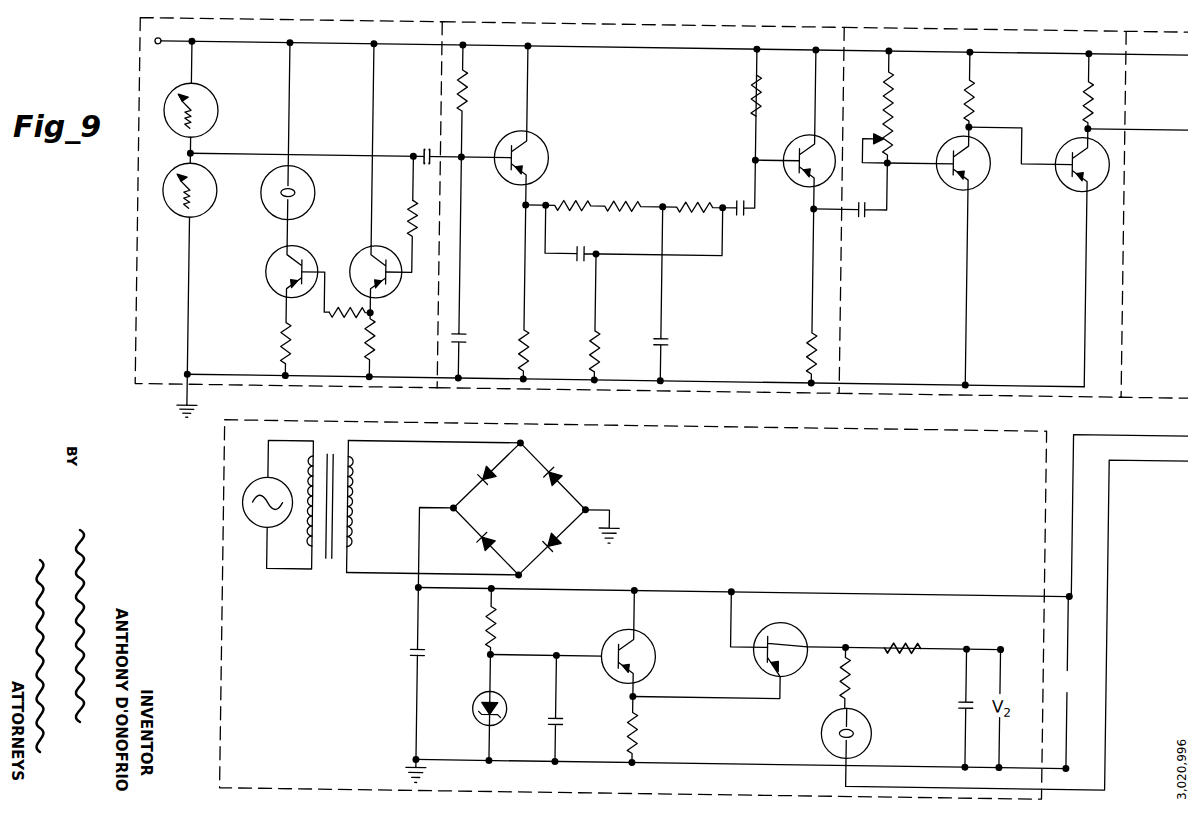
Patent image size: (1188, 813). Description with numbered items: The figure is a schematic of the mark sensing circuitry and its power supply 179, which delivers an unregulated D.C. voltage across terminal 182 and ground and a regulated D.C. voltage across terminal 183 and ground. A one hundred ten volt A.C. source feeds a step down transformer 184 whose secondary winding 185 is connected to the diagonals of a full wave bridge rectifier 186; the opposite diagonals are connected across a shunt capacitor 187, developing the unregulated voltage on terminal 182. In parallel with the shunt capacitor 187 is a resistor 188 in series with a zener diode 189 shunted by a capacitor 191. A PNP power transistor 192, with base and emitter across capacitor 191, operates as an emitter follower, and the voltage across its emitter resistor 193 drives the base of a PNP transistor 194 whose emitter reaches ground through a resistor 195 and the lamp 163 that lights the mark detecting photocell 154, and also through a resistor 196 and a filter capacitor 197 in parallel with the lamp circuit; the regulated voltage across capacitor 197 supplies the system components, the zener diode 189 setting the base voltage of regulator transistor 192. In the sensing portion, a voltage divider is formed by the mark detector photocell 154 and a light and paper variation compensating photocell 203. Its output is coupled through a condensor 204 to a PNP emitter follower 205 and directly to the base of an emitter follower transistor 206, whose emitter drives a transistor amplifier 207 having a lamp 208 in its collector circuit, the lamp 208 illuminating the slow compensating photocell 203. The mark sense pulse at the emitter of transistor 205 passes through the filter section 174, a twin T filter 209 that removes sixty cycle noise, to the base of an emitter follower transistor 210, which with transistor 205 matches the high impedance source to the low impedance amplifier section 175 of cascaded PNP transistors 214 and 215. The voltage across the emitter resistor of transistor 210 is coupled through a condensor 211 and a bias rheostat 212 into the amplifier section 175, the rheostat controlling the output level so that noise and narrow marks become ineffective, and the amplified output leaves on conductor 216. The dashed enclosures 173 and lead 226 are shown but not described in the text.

The mark detector photocell 154 is at (204, 99).
The lamp 163 is at (876, 730).
The oscillator section 173 is at (134, 330).
The filter section 174 is at (712, 392).
The amplifier section 175 is at (1016, 394).
The power supply 179 is at (228, 603).
The terminal 182 is at (1068, 590).
The terminal 183 is at (151, 50).
The step down transformer 184 is at (330, 570).
The secondary winding 185 is at (357, 505).
The full wave bridge rectifier 186 is at (507, 520).
The shunt capacitor 187 is at (431, 653).
The resistor 188 is at (500, 628).
The zener diode 189 is at (504, 698).
The capacitor 191 is at (565, 718).
The PNP power transistor 192 is at (645, 650).
The emitter resistor 193 is at (644, 726).
The PNP transistor 194 is at (800, 632).
The resistor 195 is at (854, 674).
The resistor 196 is at (908, 640).
The filter capacitor 197 is at (967, 693).
The light and paper variation compensating photocell 203 is at (183, 221).
The condensor 204 is at (424, 150).
The PNP transistor emitter follower 205 is at (537, 150).
The emitter follower transistor 206 is at (392, 292).
The transistor amplifier 207 is at (272, 281).
The lamp 208 is at (310, 200).
The twin T filter 209 is at (640, 190).
The emitter follower transistor 210 is at (798, 140).
The condensor 211 is at (868, 212).
The bias rheostat 212 is at (897, 137).
The PNP transistor 214 is at (984, 172).
The PNP transistor 215 is at (1100, 172).
The conductor 216 is at (1147, 125).
The supply lead 226 is at (1118, 428).